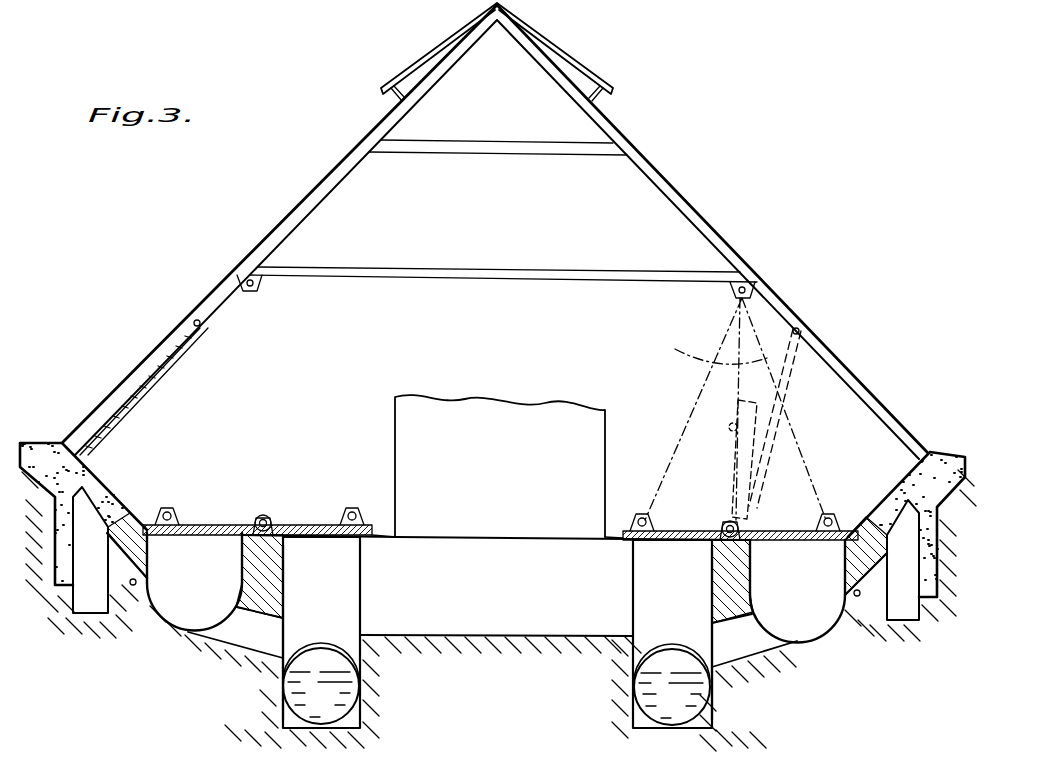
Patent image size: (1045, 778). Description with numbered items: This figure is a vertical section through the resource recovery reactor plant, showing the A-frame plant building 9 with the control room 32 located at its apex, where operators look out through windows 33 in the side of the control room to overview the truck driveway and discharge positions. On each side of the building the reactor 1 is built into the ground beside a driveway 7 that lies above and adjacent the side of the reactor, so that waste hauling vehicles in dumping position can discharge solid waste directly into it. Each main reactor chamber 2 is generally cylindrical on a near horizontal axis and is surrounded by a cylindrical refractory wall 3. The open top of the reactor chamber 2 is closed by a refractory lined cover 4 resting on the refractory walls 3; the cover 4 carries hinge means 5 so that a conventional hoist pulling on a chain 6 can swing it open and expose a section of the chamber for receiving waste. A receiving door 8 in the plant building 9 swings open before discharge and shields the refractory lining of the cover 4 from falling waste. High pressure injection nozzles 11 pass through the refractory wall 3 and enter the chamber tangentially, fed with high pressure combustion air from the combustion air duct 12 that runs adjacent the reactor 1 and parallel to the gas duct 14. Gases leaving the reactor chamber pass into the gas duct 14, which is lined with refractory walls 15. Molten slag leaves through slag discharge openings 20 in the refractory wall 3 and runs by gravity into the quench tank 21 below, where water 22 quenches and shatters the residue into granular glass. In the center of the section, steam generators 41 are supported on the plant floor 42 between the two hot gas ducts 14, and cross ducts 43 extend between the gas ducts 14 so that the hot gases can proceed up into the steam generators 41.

The reactor 1 is at (177, 627).
The main reactor chamber 2 is at (200, 565).
The refractory wall 3 is at (240, 578).
The refractory lined cover 4 is at (202, 523).
The hinge means 5 is at (268, 515).
The chain 6 is at (712, 337).
The driveway 7 is at (47, 440).
The receiving door 8 is at (165, 366).
The plant building 9 is at (725, 238).
The high pressure injection nozzle 11 is at (133, 585).
The combustion air duct 12 is at (99, 533).
The gas duct 14 is at (338, 613).
The refractory wall 15 is at (284, 563).
The slag discharge opening 20 is at (240, 657).
The quench tank 21 is at (330, 710).
The water 22 is at (338, 669).
The control room 32 is at (497, 104).
The window 33 is at (407, 65).
The steam generator 41 is at (512, 471).
The plant floor 42 is at (613, 537).
The cross duct 43 is at (507, 605).